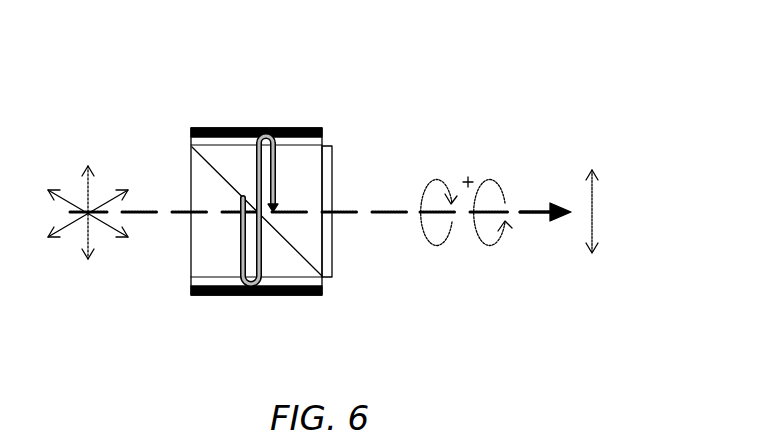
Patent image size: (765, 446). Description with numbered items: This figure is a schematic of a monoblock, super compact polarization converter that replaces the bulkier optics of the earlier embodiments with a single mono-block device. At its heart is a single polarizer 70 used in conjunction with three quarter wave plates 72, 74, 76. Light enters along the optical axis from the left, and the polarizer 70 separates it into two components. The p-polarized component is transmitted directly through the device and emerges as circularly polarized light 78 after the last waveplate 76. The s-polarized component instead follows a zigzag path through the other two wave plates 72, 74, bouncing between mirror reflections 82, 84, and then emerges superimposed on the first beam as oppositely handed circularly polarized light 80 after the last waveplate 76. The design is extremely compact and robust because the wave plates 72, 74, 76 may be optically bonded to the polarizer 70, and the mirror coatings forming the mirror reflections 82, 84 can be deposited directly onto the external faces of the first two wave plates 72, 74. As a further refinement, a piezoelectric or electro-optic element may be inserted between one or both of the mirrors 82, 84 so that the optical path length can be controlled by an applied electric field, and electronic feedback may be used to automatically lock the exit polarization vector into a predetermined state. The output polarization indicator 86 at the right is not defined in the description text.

The electro-optic modulator assembly 70 is at (263, 203).
The beam path / reflective surface 72 is at (323, 283).
The modulator housing 74 is at (322, 139).
The output plate 76 is at (333, 187).
The first rotation direction 78 is at (437, 178).
The second rotation direction 80 is at (491, 246).
The first electrode 82 is at (233, 128).
The second electrode 84 is at (263, 296).
The output linear polarization 86 is at (593, 196).